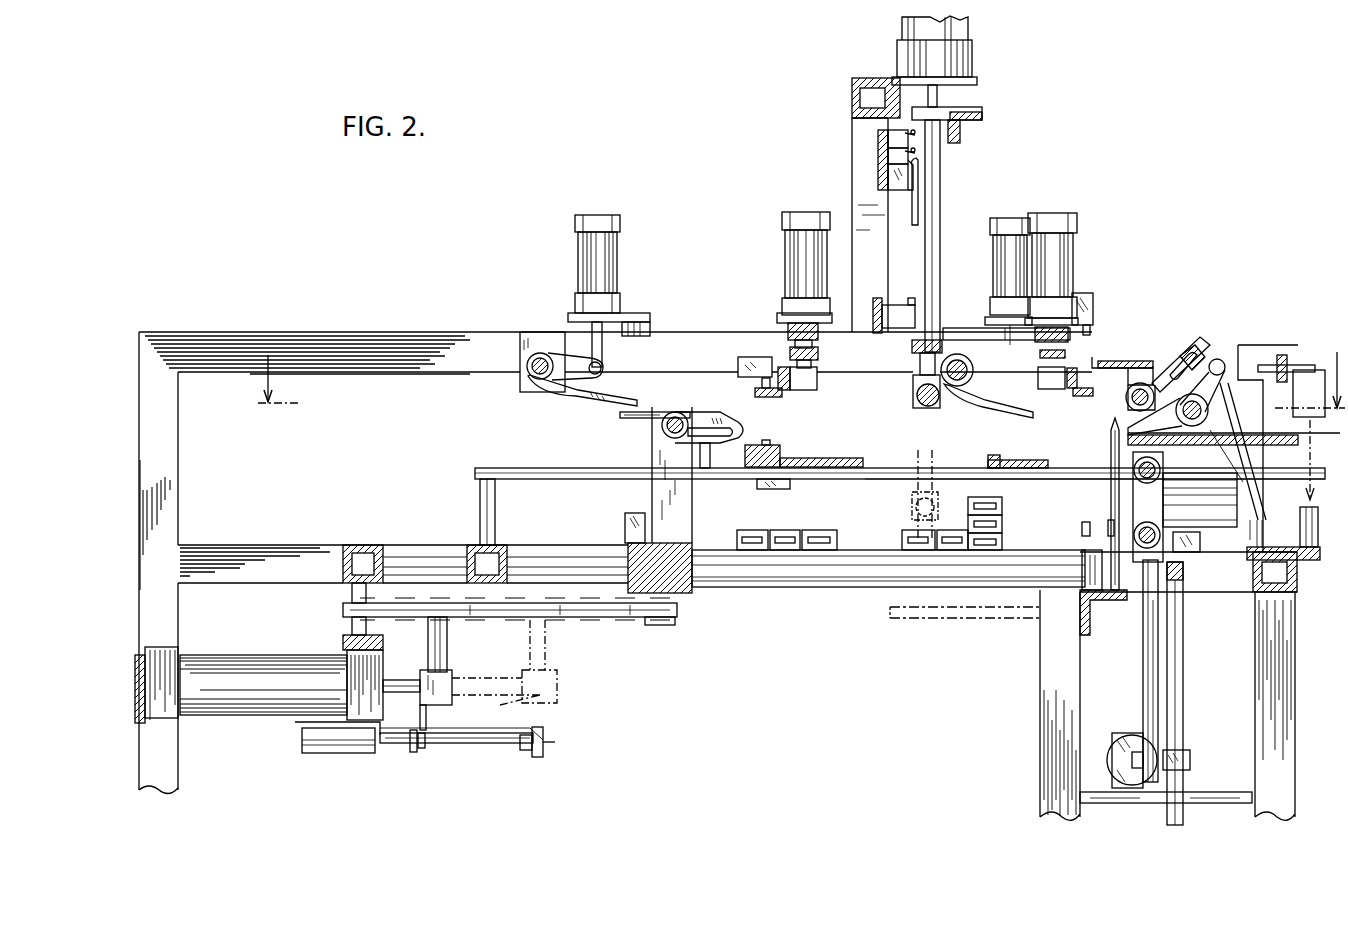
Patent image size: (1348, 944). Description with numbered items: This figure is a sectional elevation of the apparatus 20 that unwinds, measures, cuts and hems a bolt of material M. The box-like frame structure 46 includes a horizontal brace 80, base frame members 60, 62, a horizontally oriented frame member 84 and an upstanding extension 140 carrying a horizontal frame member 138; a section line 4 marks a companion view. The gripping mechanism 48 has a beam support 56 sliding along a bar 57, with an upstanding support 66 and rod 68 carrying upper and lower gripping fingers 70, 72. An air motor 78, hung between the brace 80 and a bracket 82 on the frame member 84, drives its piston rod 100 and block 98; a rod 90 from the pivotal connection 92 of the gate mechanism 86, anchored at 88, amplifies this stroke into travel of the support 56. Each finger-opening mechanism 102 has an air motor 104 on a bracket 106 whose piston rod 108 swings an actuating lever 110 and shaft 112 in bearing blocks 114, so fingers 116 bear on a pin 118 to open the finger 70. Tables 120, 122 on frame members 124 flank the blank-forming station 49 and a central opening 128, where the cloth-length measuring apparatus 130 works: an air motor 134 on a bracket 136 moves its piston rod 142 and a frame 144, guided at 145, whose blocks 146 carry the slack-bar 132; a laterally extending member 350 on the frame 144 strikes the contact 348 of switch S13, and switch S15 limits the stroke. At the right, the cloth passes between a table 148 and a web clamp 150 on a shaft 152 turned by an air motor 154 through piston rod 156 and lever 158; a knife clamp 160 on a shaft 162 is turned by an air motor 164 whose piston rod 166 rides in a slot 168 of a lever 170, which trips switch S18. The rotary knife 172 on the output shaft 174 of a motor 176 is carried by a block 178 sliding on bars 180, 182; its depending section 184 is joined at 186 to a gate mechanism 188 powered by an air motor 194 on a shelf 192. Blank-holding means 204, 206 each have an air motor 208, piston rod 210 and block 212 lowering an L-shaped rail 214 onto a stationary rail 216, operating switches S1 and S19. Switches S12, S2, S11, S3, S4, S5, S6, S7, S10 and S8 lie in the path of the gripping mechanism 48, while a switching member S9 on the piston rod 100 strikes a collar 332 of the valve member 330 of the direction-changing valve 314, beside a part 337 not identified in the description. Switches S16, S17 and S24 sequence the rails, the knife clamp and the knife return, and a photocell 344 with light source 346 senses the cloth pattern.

The section line 4- 4 is at (791, 367).
The apparatus 20 is at (648, 150).
The frame structure 46 is at (360, 333).
The gripping mechanism 48 is at (676, 408).
The blank-forming station 49 is at (900, 458).
The beam support 56 is at (688, 598).
The bar 57 is at (810, 585).
The frame member 60 is at (478, 545).
The frame member 62 is at (1085, 580).
The upstanding support 66 is at (655, 457).
The rod 68 is at (662, 428).
The upper gripping finger 70 is at (720, 420).
The lower gripping finger 72 is at (730, 443).
The air motor 78 is at (250, 660).
The horizontal brace 80 is at (155, 720).
The bracket 82 is at (343, 640).
The horizontally oriented frame member 84 is at (360, 545).
The gate mechanism 86 is at (600, 628).
The stationary mounting 88 is at (345, 596).
The rod 90 is at (448, 648).
The pivotal connection 92 is at (450, 575).
The block 98 is at (450, 700).
The piston rod 100 is at (396, 682).
The finger-opening mechanism 102 is at (596, 204).
The air motor 104 is at (580, 253).
The bracket 106 is at (640, 318).
The air motor piston rod 108 is at (605, 353).
The actuating lever 110 is at (598, 382).
The shaft 112 is at (528, 372).
The bearing block 114 is at (528, 340).
The finger 116 is at (600, 397).
The pin 118 is at (618, 420).
The table 120 is at (845, 458).
The table 122 is at (992, 462).
The frame members 124 is at (528, 468).
The central opening 128 is at (870, 470).
The cloth-length measuring apparatus 130 is at (985, 80).
The slack-bar 132 is at (913, 398).
The air motor 134 is at (905, 48).
The bracket 136 is at (982, 82).
The horizontal frame member 138 is at (850, 92).
The upstanding extension 140 is at (852, 191).
The motor piston rod 142 is at (940, 96).
The frame 144 is at (942, 166).
The guide 145 is at (912, 347).
The block 146 is at (913, 380).
The table 148 is at (1288, 445).
The web clamp 150 is at (1165, 430).
The rotatable shaft 152 is at (1195, 428).
The air motor 154 is at (1248, 475).
The piston rod 156 is at (1240, 400).
The lever 158 is at (1225, 380).
The knife clamp 160 is at (1122, 360).
The rotatable shaft 162 is at (1140, 385).
The air motor 164 is at (950, 328).
The piston rod 166 is at (1165, 350).
The slot 168 is at (1180, 345).
The lever 170 is at (1218, 355).
The rotary knife 172 is at (1100, 600).
The output shaft 174 is at (1115, 502).
The motor 176 is at (1240, 517).
The block 178 is at (1188, 495).
The bar 180 is at (1155, 475).
The bar 182 is at (1108, 530).
The depending section 184 is at (1155, 680).
The connection 186 is at (1135, 738).
The gate mechanism 188 is at (1190, 705).
The shelf 192 is at (1085, 798).
The air motor 194 is at (1110, 750).
The blank-holding means 204 is at (778, 225).
The blank-holding means 206 is at (1065, 212).
The air motor 208 is at (788, 243).
The piston rod 210 is at (790, 332).
The block 212 is at (800, 390).
The L-shaped rail 214 is at (775, 397).
The stationary rail 216 is at (775, 448).
The direction-changing valve 314 is at (330, 750).
The valve member 330 is at (490, 752).
The collar 332 is at (530, 758).
The actuator 337 is at (412, 752).
The photocell 344 is at (1255, 575).
The light source 346 is at (1312, 370).
The switch contact 348 is at (918, 210).
The laterally extending member 350 is at (983, 110).
The material M is at (1318, 440).
The switch S1 is at (748, 357).
The switch S2 is at (752, 530).
The switch S3 is at (822, 530).
The switch S4 is at (910, 530).
The switch S5 is at (958, 551).
The switch S6 is at (1000, 519).
The switch S7 is at (1000, 536).
The switch S8 is at (1085, 525).
The switching member S9 is at (428, 750).
The switch S10 is at (1000, 502).
The switch S11 is at (786, 530).
The switch S12 is at (630, 515).
The switch S13 is at (890, 168).
The switch S15 is at (905, 305).
The switch S16 is at (880, 150).
The switch S17 is at (878, 135).
The switch S18 is at (1093, 305).
The switch S19 is at (788, 487).
The switch S24 is at (1195, 553).